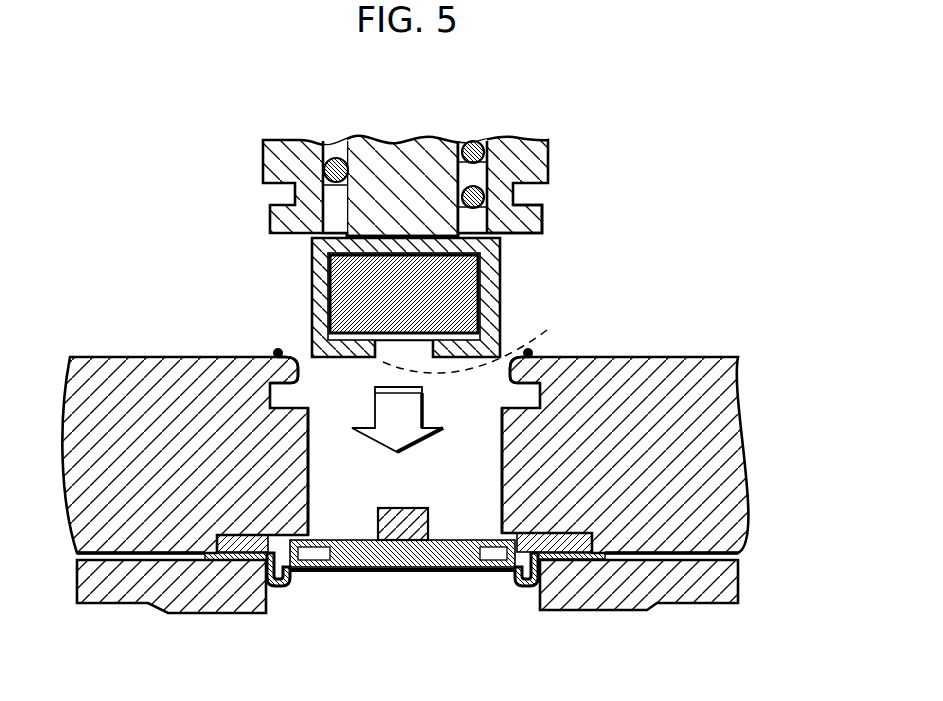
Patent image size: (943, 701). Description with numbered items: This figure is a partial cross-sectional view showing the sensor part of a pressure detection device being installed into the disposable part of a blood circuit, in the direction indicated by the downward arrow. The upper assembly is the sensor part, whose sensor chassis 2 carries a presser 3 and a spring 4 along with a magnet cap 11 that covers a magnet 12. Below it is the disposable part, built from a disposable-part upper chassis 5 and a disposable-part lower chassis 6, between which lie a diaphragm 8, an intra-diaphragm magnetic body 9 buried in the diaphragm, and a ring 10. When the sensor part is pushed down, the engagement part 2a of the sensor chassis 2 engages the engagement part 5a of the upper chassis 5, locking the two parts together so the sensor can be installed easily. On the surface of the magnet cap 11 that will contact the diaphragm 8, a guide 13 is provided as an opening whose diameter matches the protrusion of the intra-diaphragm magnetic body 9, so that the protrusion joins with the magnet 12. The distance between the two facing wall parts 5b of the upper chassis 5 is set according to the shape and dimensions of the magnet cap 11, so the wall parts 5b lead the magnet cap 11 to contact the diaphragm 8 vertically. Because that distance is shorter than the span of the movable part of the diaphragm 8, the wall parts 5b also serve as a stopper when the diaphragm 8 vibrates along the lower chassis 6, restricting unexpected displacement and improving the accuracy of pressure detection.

The sensor chassis 2 is at (527, 157).
The engagement part 2a is at (533, 217).
The presser 3 is at (368, 203).
The spring 4 is at (483, 177).
The disposable-part upper chassis 5 is at (700, 468).
The engagement part 5a is at (543, 380).
The wall parts 5b is at (503, 522).
The disposable-part lower chassis 6 is at (697, 583).
The diaphragm 8 is at (420, 570).
The intra-diaphragm magnetic body 9 is at (383, 570).
The ring 10 is at (608, 543).
The magnet cap 11 is at (315, 297).
The magnet 12 is at (450, 277).
The guide 13 is at (547, 330).